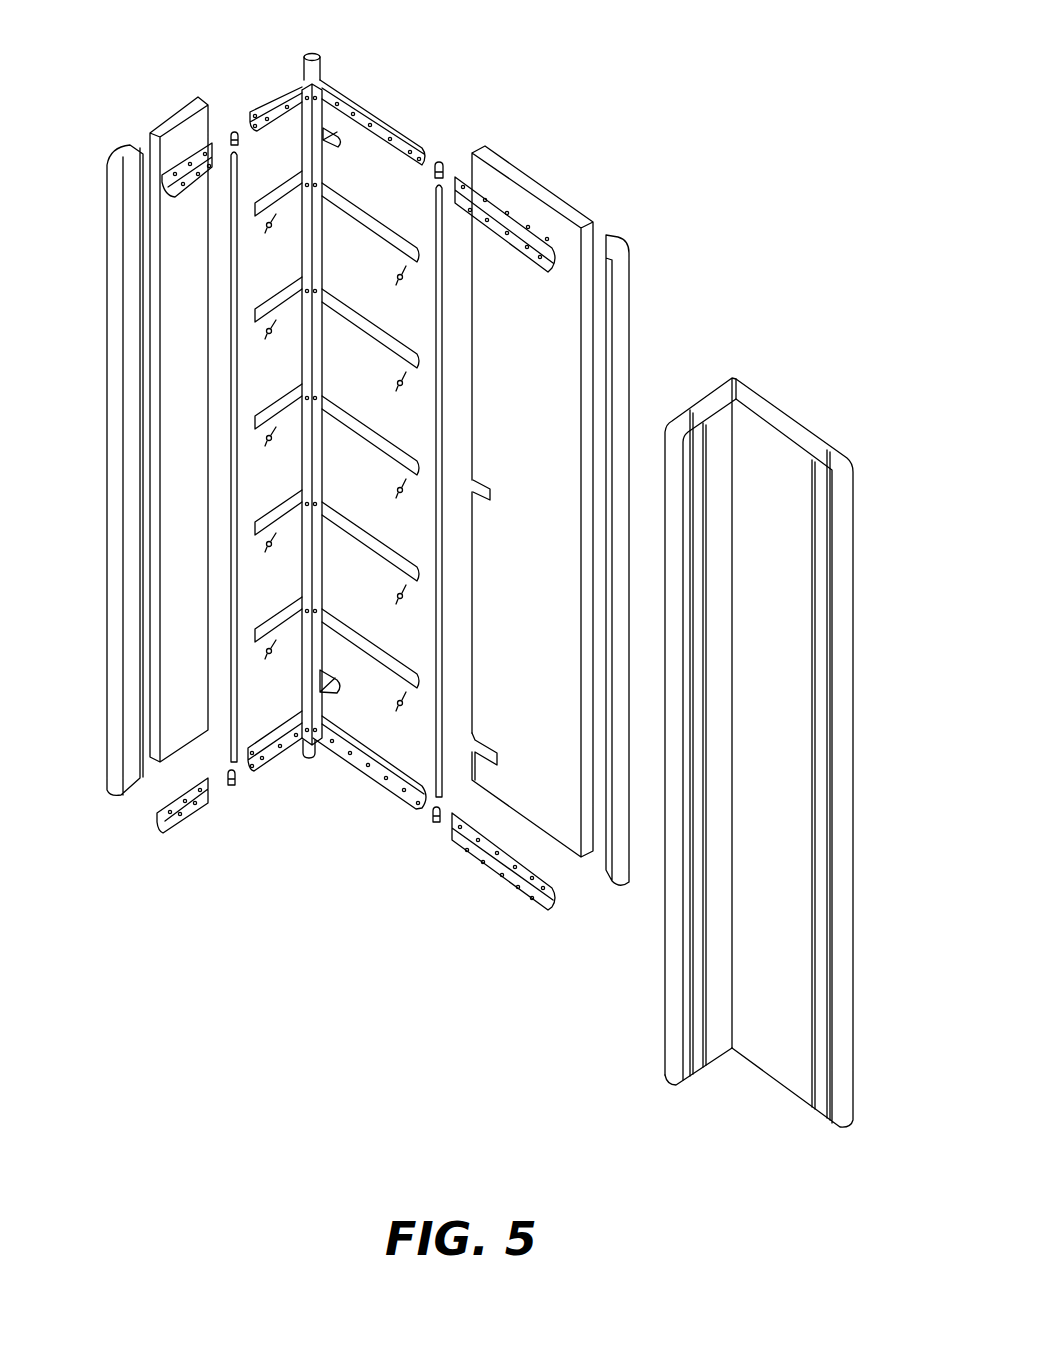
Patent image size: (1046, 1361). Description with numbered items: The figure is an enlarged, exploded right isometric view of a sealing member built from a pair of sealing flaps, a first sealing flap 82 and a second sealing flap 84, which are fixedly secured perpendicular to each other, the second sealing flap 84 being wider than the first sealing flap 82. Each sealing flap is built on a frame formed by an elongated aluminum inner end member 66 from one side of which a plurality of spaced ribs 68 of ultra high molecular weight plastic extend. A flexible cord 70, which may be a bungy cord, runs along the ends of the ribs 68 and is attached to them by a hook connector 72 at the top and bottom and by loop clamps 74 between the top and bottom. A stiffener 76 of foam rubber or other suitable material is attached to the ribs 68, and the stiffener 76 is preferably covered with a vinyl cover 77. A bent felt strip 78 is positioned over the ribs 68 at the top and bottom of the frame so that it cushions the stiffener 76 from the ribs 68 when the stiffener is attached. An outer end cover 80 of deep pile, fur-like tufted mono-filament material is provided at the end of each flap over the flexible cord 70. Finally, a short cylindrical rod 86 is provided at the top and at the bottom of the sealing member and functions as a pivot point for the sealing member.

The inner end member 66 is at (300, 132).
The ribs 68 is at (282, 398).
The flexible cord 70 is at (238, 476).
The hook connector 72 is at (444, 160).
The loop clamps 74 is at (268, 236).
The stiffener 76 is at (183, 115).
The vinyl cover 77 is at (790, 400).
The bent felt strip 78 is at (178, 196).
The outer end cover 80 is at (107, 367).
The first sealing flap 82 is at (178, 45).
The second sealing flap 84 is at (568, 112).
The short cylindrical rod 86 is at (322, 56).